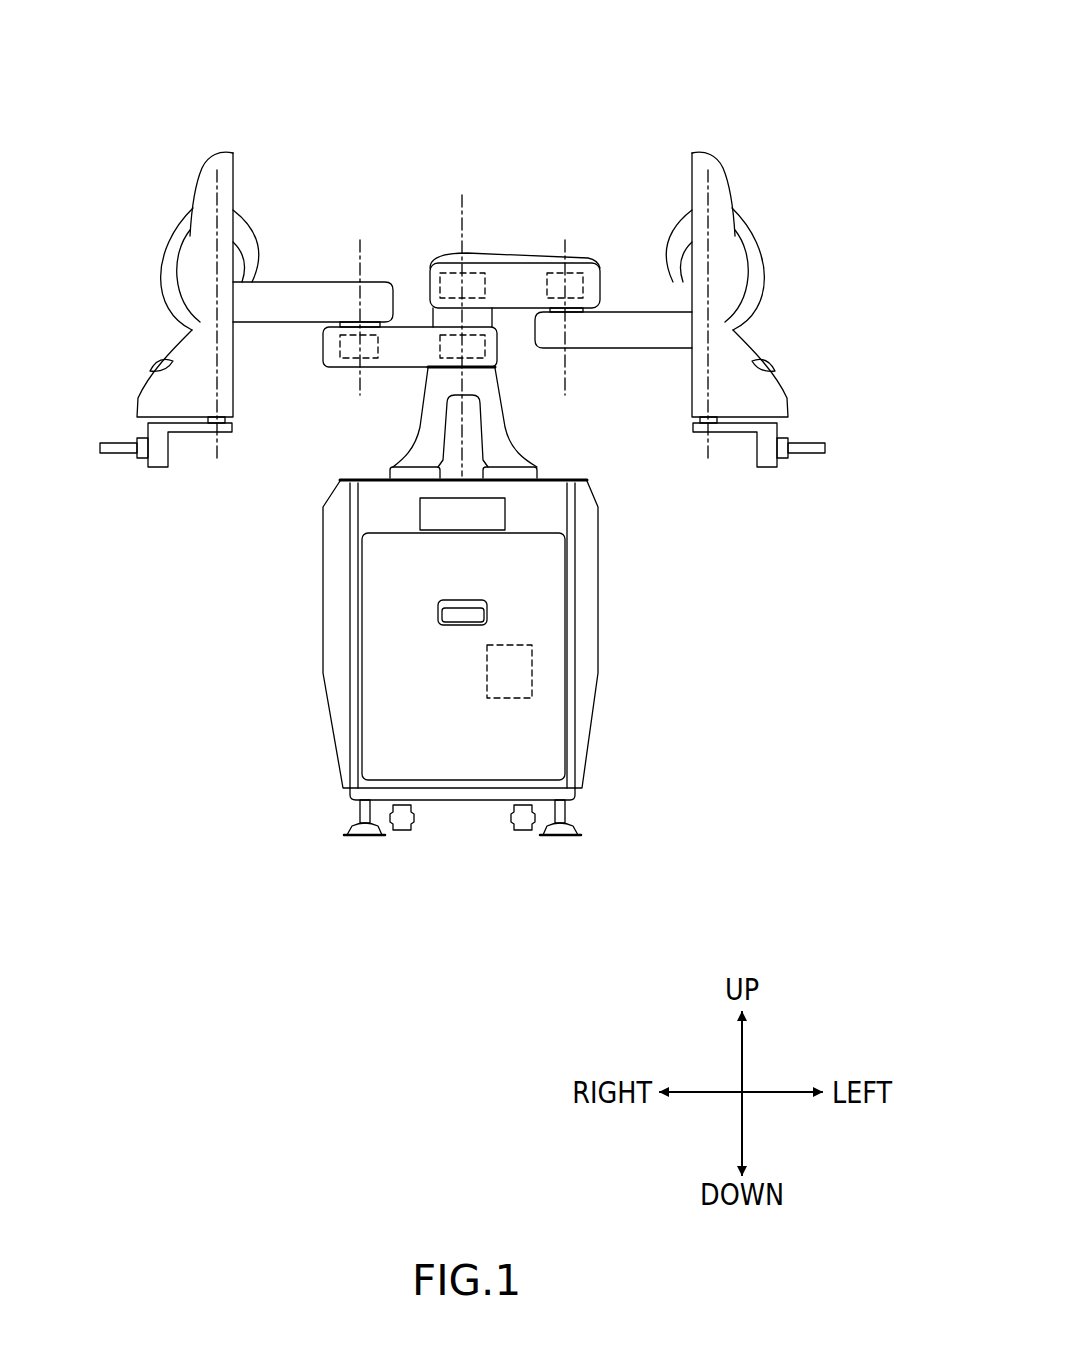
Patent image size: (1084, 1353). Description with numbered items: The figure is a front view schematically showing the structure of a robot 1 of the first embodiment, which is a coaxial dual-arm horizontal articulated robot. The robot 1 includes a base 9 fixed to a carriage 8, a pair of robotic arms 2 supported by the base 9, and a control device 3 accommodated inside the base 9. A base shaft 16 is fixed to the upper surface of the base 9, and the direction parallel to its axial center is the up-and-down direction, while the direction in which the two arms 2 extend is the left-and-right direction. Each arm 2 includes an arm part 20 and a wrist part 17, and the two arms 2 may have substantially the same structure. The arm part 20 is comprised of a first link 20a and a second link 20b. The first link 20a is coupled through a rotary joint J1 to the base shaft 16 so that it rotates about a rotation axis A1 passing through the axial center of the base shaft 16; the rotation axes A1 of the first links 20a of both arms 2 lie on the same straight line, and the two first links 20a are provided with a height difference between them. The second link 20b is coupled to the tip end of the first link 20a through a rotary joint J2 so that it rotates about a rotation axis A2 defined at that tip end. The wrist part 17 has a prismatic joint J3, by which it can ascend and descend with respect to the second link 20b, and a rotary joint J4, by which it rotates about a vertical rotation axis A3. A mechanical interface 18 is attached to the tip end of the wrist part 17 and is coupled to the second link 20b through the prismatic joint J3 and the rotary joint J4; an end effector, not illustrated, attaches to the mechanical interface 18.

The robot 1 is at (659, 118).
The robotic arm 2 is at (217, 150).
The control device 3 is at (532, 665).
The carriage 8 is at (604, 586).
The base 9 is at (545, 470).
The base shaft 16 is at (508, 428).
The wrist part 17 is at (176, 340).
The mechanical interface 18 is at (160, 468).
The arm part 20 is at (462, 248).
The first link 20a is at (417, 323).
The second link 20b is at (300, 282).
The rotation axis A1 is at (464, 317).
The rotation axis A2 is at (464, 303).
The rotation axis A3 is at (212, 186).
The rotary joint J1 is at (452, 274).
The rotary joint J2 is at (340, 345).
The prismatic joint J3 is at (207, 201).
The rotary joint J4 is at (228, 421).